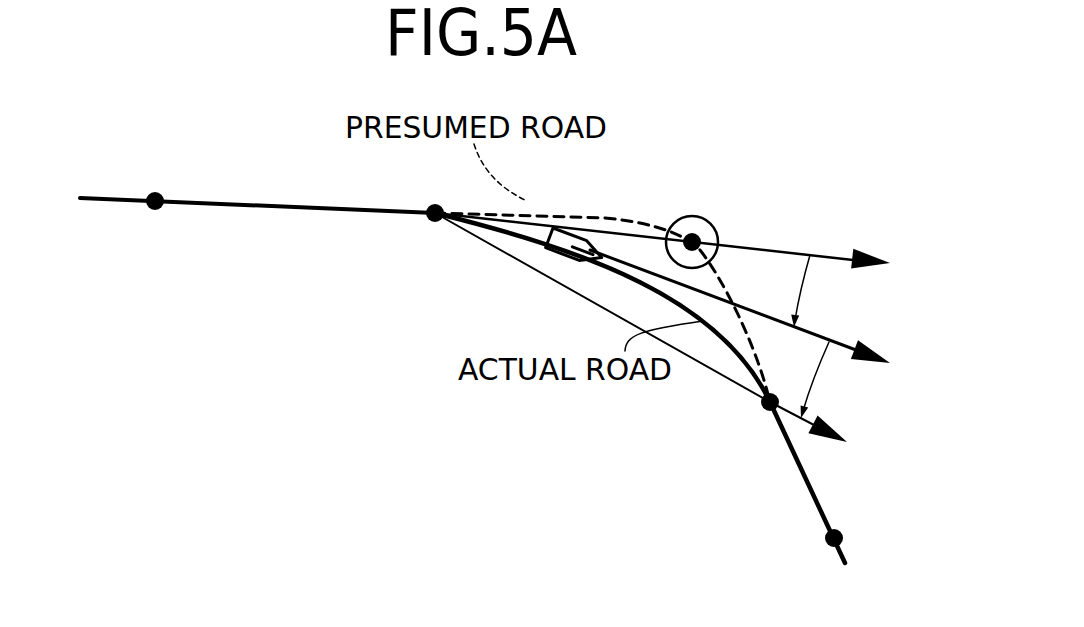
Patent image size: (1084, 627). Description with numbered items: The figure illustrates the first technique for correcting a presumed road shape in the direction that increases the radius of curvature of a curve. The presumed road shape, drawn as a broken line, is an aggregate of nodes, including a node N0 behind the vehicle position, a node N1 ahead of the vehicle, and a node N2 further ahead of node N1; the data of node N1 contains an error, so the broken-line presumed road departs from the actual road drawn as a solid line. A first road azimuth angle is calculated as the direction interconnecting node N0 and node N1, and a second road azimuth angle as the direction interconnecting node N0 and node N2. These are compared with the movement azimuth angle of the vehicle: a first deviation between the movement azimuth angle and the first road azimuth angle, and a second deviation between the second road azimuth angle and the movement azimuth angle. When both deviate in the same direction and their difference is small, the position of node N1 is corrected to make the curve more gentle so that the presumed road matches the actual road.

The node behind the vehicle position N0 is at (433, 222).
The node ahead of the vehicle position N1 is at (693, 233).
The node further ahead N2 is at (761, 410).